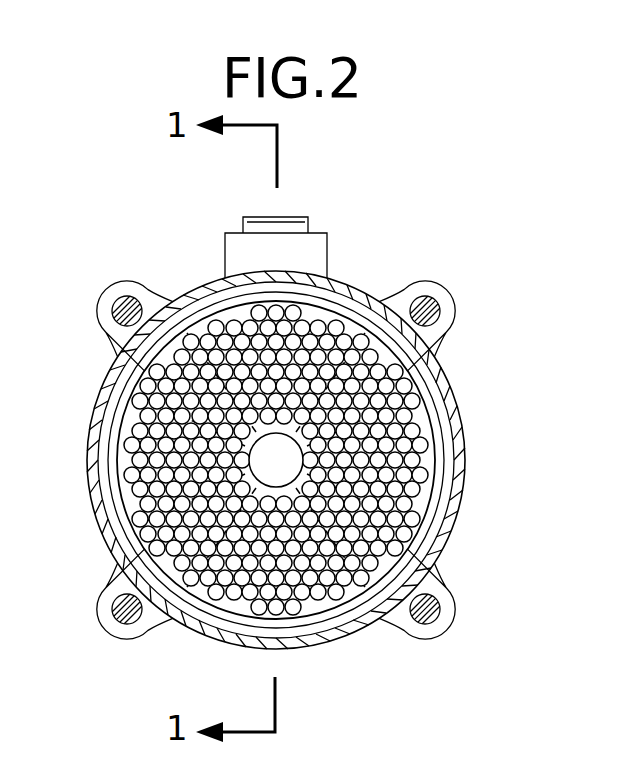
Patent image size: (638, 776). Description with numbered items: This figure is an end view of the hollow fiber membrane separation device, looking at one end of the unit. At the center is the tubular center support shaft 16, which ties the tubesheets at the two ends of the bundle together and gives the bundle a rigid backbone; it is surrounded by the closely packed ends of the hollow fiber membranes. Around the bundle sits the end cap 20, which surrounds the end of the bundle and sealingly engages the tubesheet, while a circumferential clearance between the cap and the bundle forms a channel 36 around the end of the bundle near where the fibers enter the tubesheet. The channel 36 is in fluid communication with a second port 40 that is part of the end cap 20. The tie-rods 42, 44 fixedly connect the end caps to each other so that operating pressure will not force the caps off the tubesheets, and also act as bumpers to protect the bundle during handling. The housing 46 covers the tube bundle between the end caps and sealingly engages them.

The tubular center support shaft 16 is at (270, 457).
The end cap 20 is at (450, 448).
The channel 36 is at (453, 545).
The second port 40 is at (283, 257).
The tie-rod 42 is at (117, 315).
The tie-rod 44 is at (110, 600).
The housing 46 is at (467, 498).